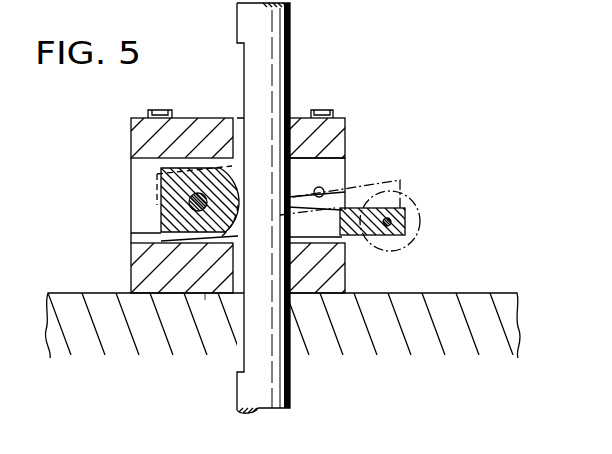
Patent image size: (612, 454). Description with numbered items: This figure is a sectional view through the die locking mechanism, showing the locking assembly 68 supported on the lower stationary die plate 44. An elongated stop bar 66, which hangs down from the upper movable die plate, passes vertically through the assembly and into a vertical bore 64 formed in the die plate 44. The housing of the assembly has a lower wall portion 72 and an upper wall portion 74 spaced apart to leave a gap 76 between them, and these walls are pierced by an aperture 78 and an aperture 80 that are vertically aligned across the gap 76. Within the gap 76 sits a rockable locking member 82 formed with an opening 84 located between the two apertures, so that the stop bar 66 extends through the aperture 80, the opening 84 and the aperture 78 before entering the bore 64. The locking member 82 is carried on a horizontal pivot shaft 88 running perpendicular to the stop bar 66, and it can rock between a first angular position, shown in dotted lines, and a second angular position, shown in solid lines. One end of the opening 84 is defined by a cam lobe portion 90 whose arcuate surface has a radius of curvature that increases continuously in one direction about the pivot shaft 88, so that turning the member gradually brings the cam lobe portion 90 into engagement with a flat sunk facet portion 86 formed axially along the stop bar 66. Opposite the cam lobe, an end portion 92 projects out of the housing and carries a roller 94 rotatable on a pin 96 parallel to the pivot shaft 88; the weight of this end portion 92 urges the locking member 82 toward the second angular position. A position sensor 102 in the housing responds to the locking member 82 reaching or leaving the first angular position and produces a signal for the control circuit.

The lower stationary die plate 44 is at (493, 293).
The vertical bore 64 is at (291, 345).
The stop bar 66 is at (292, 22).
The locking assembly 68 is at (339, 76).
The lower wall portion 72 is at (132, 274).
The upper wall portion 74 is at (131, 140).
The gap 76 is at (132, 238).
The aperture 78 is at (220, 324).
The aperture 80 is at (238, 118).
The rockable locking member 82 is at (150, 185).
The opening 84 is at (344, 267).
The flat sunk facet portion 86 is at (245, 62).
The pivot shaft 88 is at (188, 203).
The cam lobe portion 90 is at (241, 205).
The end portion 92 is at (392, 239).
The roller 94 is at (420, 223).
The pin 96 is at (403, 181).
The position sensor 102 is at (323, 188).